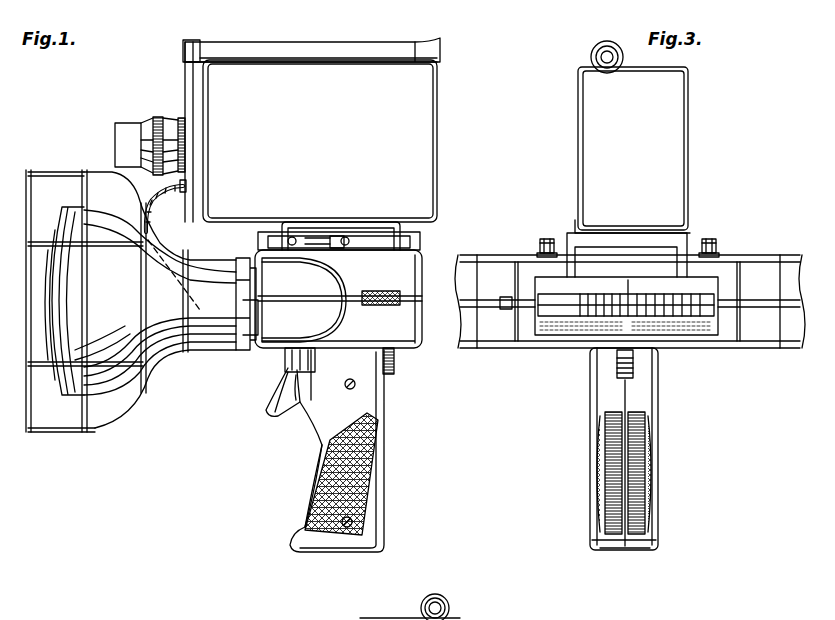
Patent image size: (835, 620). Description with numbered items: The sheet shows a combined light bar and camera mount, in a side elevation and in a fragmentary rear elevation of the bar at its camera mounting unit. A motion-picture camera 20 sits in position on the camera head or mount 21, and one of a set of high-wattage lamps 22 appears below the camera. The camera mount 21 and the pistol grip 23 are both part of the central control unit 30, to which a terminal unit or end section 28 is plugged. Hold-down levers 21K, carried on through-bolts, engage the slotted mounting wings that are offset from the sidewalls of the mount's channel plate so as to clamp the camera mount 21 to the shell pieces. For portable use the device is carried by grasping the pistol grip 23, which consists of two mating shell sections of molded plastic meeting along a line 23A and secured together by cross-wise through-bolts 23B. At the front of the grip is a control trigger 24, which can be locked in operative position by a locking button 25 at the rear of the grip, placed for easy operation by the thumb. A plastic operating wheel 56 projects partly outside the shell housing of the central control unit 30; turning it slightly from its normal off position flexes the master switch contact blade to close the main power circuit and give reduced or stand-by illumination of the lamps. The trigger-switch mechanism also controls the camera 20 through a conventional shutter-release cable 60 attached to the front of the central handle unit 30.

In FIG. 1, the motion-picture camera 20 is at (332, 140).
In FIG. 3, the motion-picture camera 20 is at (644, 152).
In FIG. 1, the camera head or mount 21 is at (432, 238).
In FIG. 3, the camera head or mount 21 is at (556, 229).
In FIG. 1, the hold-down levers 21K is at (345, 240).
In FIG. 3, the hold-down levers 21K is at (716, 240).
In FIG. 1, the high-wattage lamps 22 is at (68, 390).
In FIG. 1, the pistol grip 23 is at (388, 418).
In FIG. 3, the pistol grip 23 is at (588, 432).
In FIG. 3, the meeting line of grip shell sections 23A is at (619, 548).
In FIG. 1, the cross-wise through-bolts 23B is at (356, 386).
In FIG. 1, the control trigger 24 is at (270, 376).
In FIG. 1, the locking button 25 is at (396, 366).
In FIG. 3, the locking button 25 is at (616, 356).
In FIG. 1, the end section 28 is at (275, 334).
In FIG. 3, the central control unit 30 is at (767, 324).
In FIG. 1, the operating wheel 56 is at (396, 276).
In FIG. 1, the shutter-release cable 60 is at (150, 196).